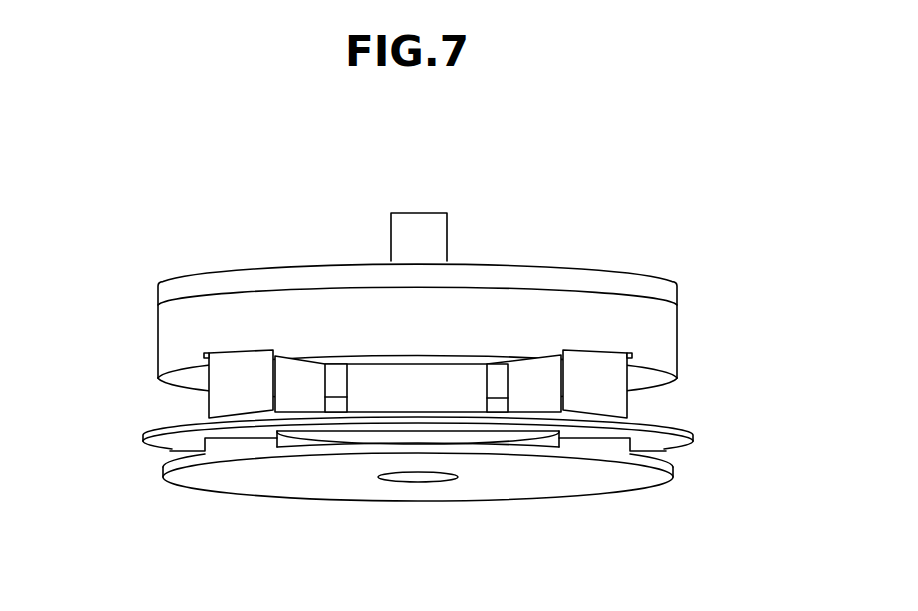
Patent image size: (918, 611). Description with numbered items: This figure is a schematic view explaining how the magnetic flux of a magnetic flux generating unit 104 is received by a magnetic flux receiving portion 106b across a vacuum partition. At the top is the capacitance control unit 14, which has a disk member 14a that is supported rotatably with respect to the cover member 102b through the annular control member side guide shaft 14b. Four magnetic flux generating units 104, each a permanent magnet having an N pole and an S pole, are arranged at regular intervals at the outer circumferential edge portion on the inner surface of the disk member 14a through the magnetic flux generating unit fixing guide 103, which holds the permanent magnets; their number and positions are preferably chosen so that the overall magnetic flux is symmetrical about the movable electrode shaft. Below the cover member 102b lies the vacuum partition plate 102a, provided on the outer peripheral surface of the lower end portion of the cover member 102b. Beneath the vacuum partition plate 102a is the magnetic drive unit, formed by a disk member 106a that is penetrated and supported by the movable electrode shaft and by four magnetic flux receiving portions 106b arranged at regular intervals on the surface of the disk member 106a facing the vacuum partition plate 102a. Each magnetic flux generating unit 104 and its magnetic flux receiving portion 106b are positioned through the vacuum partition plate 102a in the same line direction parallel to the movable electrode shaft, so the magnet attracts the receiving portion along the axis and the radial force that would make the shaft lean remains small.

The capacitance control unit 14 is at (702, 265).
The disk member 14a is at (597, 262).
The control member side guide shaft 14b is at (421, 211).
The vacuum partition plate 102a is at (668, 445).
The cover member 102b is at (387, 377).
The magnetic flux generating unit fixing guide 103 is at (178, 332).
The magnetic flux generating unit 104 is at (215, 397).
The disk member 106a is at (342, 477).
The magnetic flux receiving portion 106b is at (242, 442).